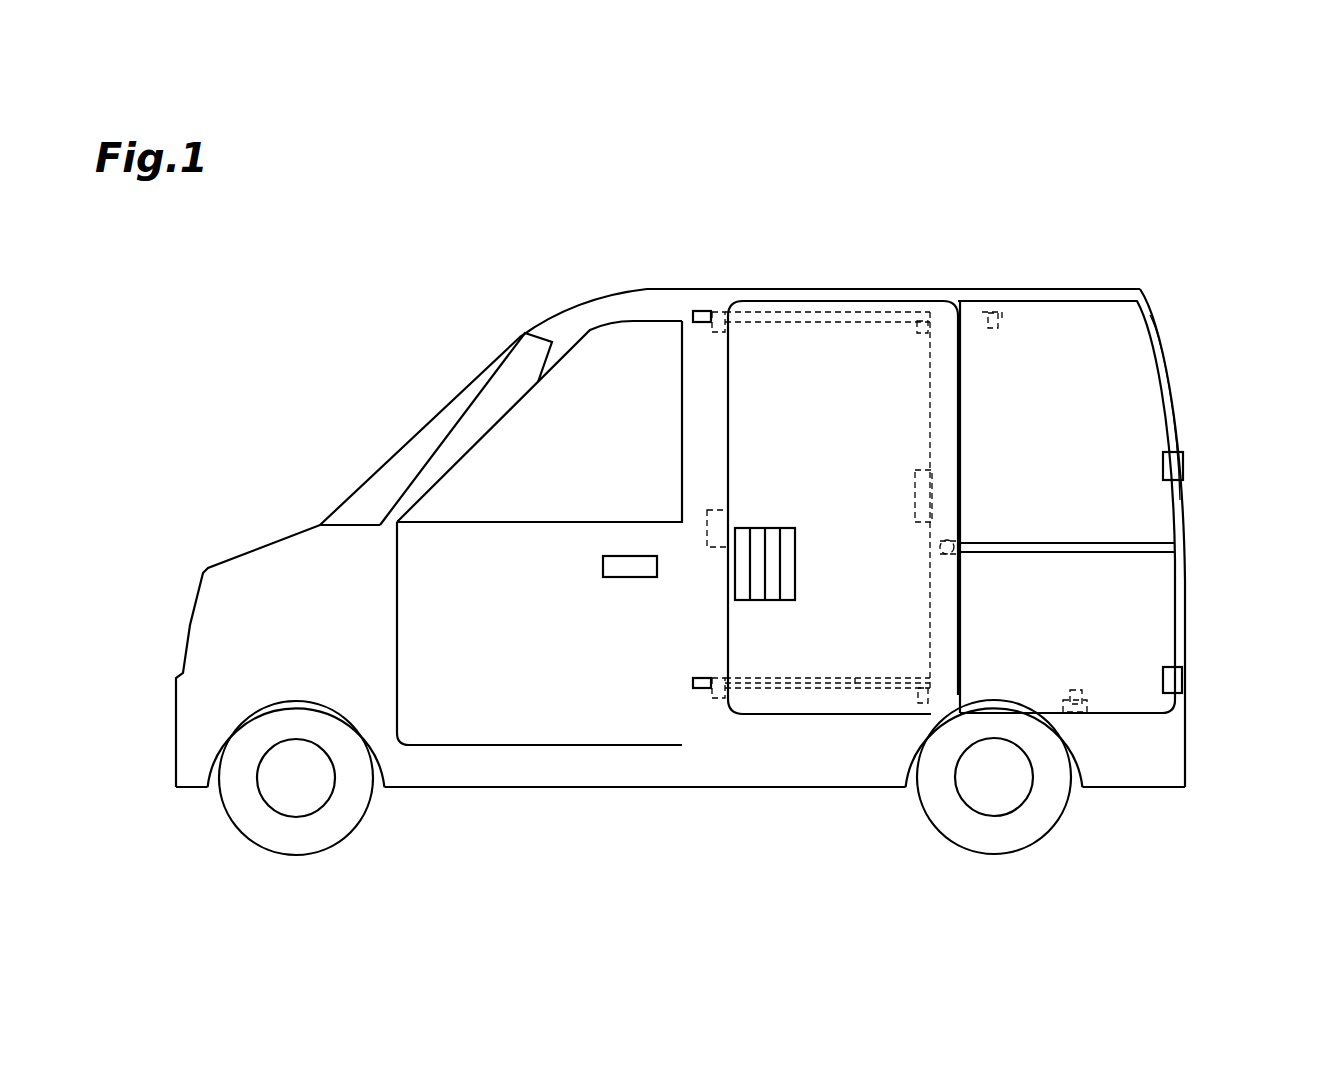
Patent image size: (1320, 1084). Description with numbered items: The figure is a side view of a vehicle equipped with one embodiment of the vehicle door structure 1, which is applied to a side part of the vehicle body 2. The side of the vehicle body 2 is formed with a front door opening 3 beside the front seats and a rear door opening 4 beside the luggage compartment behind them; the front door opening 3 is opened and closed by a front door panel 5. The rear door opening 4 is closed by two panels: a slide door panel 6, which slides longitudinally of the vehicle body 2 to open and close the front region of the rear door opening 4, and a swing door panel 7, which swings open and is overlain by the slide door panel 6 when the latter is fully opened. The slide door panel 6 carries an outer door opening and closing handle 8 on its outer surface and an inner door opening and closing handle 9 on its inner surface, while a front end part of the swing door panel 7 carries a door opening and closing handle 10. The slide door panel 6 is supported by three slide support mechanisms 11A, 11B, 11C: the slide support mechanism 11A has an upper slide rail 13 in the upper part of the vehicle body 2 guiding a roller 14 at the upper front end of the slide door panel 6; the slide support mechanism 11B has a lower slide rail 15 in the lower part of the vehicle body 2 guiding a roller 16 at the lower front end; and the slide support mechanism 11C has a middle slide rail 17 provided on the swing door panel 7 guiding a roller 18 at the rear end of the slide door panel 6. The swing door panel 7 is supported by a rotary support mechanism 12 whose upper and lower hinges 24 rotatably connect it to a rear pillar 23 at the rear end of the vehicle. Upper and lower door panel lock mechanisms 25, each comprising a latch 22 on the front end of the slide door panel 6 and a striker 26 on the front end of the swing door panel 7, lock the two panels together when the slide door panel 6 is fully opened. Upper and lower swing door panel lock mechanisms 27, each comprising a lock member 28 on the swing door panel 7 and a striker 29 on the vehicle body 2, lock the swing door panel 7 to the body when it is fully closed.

The vehicle door structure 1 is at (1005, 302).
The vehicle body 2 is at (664, 302).
The front door opening 3 is at (623, 325).
The rear door opening 4 is at (1062, 310).
The front door panel 5 is at (526, 708).
The slide door panel 6 is at (830, 657).
The swing door panel 7 is at (1122, 605).
The outer door opening and closing handle 8 is at (787, 562).
The inner door opening and closing handle 9 is at (712, 512).
The door opening and closing handle 10 is at (916, 488).
The slide support mechanism 11A is at (888, 309).
The slide support mechanism 11B is at (760, 688).
The slide support mechanism 11C is at (1016, 544).
The rotary support mechanism 12 is at (1182, 449).
The upper slide rail 13 is at (843, 312).
The roller 14 is at (720, 312).
The lower slide rail 15 is at (856, 682).
The roller 16 is at (712, 680).
The middle slide rail 17 is at (1058, 548).
The roller 18 is at (950, 553).
The latch 22 is at (725, 330).
The rear pillar 23 is at (1163, 372).
The hinge 24 is at (1180, 463).
The door panel lock mechanism 25 is at (853, 357).
The striker 26 is at (918, 322).
The swing door panel lock mechanism 27 is at (1047, 392).
The lock member 28 is at (988, 330).
The striker 29 is at (1005, 316).